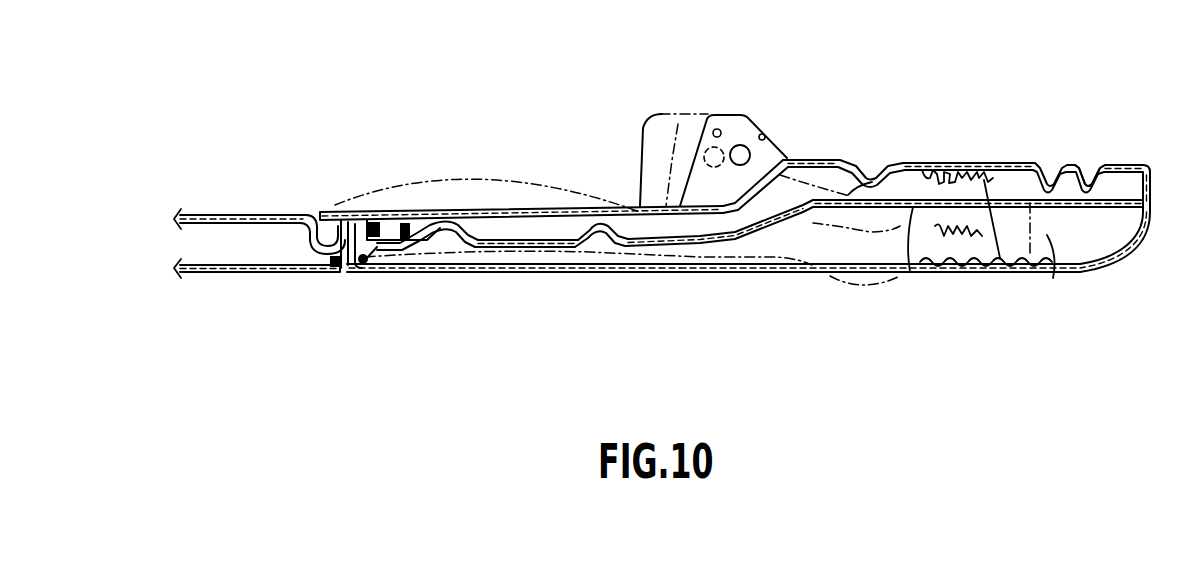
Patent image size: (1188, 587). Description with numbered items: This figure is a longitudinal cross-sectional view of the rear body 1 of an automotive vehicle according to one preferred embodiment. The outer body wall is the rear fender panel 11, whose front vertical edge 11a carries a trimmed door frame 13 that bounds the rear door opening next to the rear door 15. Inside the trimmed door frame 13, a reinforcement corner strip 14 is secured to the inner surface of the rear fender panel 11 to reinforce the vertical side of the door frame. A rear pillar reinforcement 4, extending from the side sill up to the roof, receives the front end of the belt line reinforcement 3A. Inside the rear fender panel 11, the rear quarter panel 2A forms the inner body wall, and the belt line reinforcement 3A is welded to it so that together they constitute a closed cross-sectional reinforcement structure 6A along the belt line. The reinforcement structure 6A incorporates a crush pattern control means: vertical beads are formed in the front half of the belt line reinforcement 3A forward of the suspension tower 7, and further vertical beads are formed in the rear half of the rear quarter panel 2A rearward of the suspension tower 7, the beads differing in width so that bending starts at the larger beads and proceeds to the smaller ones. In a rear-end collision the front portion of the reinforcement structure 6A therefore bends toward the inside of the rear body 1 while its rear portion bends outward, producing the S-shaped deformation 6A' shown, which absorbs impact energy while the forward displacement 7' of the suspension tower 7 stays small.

The rear body 1 is at (541, 272).
The rear quarter panel 2A is at (813, 158).
The belt line reinforcement 3A is at (910, 272).
The rear pillar reinforcement 4 is at (379, 216).
The reinforcement structure 6A is at (589, 204).
The S-shaped deformation 6A' is at (833, 320).
The suspension tower 7 is at (776, 124).
The forward displacement of suspension tower 7' is at (684, 109).
The rear fender panel 11 is at (717, 272).
The front vertical edge 11a is at (320, 228).
The trimmed door frame 13 is at (348, 268).
The reinforcement corner strip 14 is at (367, 264).
The rear door 15 is at (240, 273).